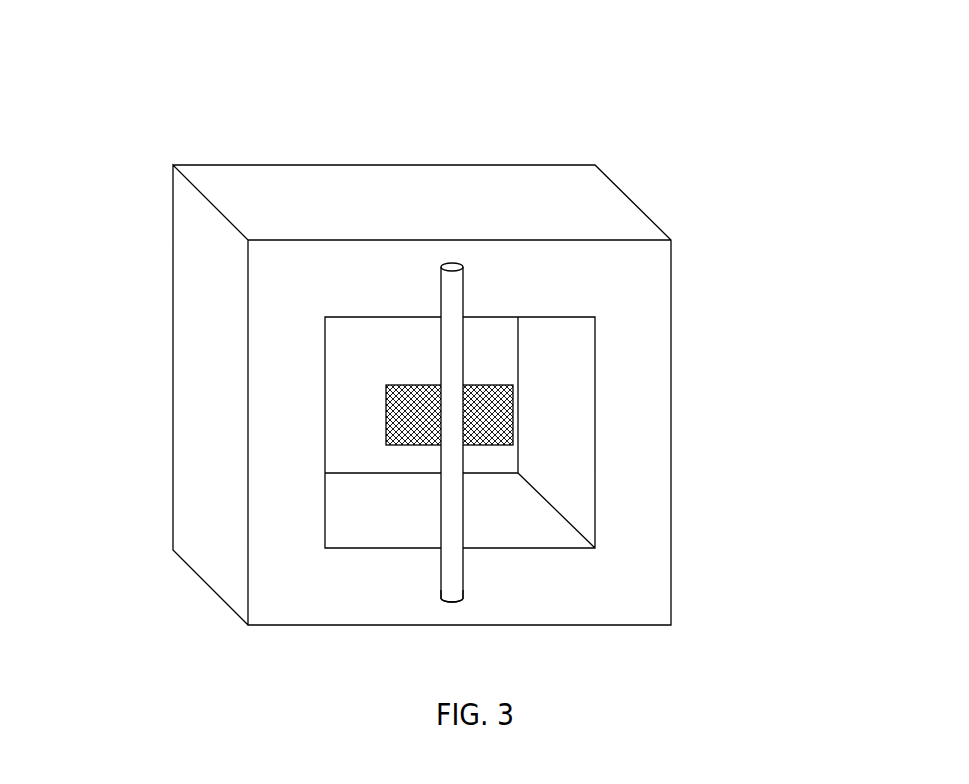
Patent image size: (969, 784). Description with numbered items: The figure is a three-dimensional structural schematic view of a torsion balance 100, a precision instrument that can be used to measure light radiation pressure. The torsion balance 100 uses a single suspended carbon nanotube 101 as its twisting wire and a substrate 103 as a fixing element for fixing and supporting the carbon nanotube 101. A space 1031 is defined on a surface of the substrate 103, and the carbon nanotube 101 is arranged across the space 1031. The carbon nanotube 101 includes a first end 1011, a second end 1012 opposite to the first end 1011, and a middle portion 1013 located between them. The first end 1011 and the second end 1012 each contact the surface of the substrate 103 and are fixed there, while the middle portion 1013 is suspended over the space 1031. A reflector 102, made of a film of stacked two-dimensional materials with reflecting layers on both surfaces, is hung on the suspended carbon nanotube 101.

The torsion balance 100 is at (409, 103).
The carbon nanotube 101 is at (656, 433).
The first end 1011 is at (448, 288).
The second end 1012 is at (448, 580).
The middle portion 1013 is at (448, 415).
The reflector 102 is at (405, 413).
The substrate 103 is at (288, 493).
The space 1031 is at (345, 357).